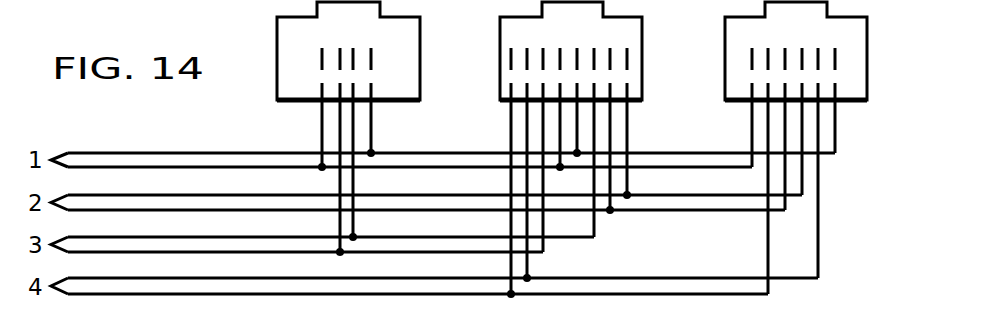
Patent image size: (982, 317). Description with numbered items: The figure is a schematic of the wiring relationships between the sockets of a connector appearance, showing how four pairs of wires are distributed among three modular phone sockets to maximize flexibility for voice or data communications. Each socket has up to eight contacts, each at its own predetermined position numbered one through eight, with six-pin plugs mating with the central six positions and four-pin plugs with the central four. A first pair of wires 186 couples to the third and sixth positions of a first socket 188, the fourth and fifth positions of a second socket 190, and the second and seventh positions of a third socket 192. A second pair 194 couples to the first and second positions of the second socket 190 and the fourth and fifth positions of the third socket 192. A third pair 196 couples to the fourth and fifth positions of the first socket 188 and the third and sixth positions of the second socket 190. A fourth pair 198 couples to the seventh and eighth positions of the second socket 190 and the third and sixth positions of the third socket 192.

The first pair of wires 186 is at (67, 153).
The second pair 194 is at (68, 196).
The third pair 196 is at (67, 238).
The fourth pair 198 is at (67, 280).
The first socket 188 is at (277, 101).
The second socket 190 is at (500, 80).
The third socket 192 is at (725, 79).